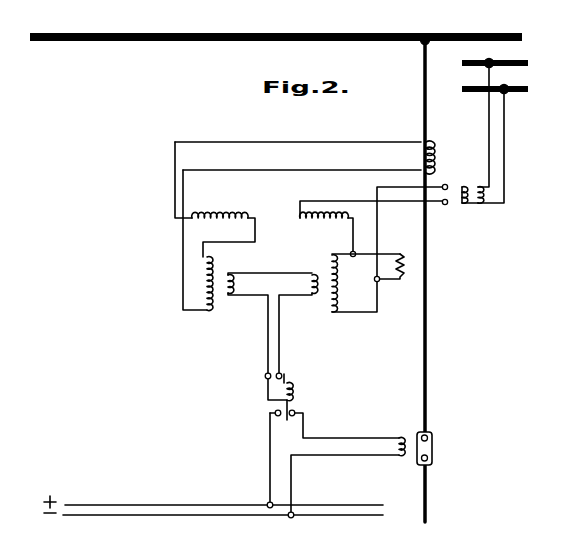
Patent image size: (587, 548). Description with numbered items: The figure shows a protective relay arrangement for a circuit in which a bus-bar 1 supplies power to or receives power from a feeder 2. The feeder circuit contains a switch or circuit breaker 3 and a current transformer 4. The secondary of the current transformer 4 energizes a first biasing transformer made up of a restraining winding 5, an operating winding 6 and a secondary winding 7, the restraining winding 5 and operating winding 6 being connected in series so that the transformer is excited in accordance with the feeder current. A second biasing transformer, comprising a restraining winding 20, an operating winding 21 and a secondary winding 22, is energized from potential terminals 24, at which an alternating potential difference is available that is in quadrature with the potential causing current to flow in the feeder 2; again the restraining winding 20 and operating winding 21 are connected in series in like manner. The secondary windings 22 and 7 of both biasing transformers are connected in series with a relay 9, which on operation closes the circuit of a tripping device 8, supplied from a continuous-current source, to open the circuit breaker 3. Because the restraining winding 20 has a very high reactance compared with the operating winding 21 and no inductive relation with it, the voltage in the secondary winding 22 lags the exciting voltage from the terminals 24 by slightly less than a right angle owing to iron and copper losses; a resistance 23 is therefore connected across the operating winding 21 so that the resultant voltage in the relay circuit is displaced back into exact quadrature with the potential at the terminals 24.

The bus-bar 1 is at (286, 36).
The feeder 2 is at (429, 328).
The circuit breaker 3 is at (433, 449).
The current transformer 4 is at (434, 162).
The restraining winding 5 is at (228, 214).
The operating winding 6 is at (203, 290).
The secondary winding 7 is at (233, 295).
The tripping device 8 is at (402, 436).
The relay 9 is at (295, 400).
The restraining winding 20 is at (331, 226).
The operating winding 21 is at (341, 286).
The secondary winding 22 is at (309, 297).
The resistance 23 is at (404, 266).
The potential terminals 24 is at (447, 205).